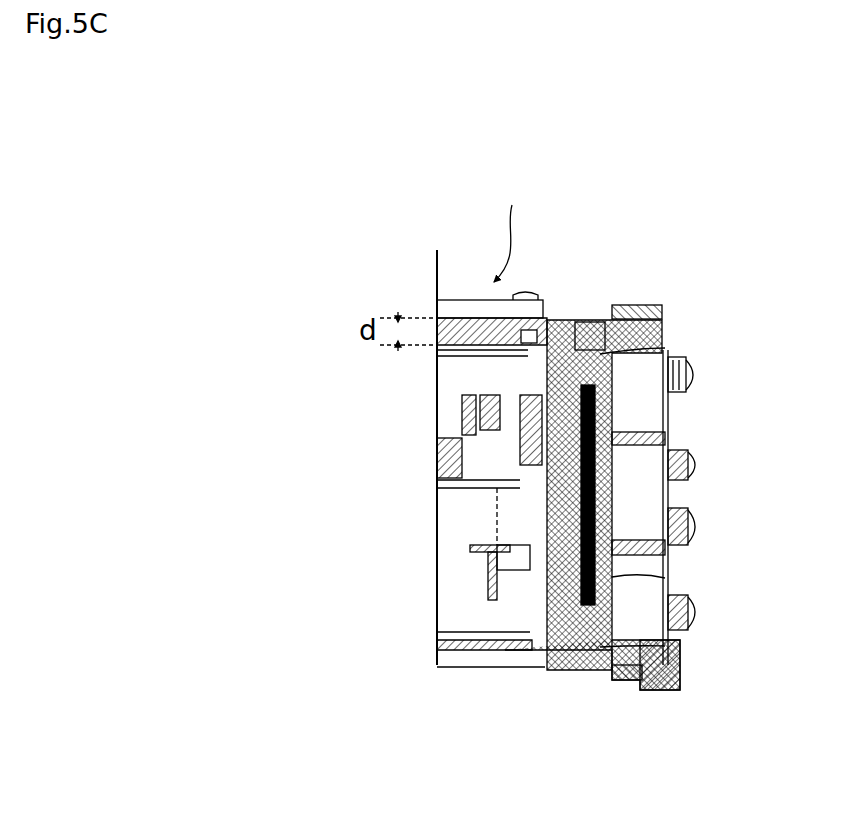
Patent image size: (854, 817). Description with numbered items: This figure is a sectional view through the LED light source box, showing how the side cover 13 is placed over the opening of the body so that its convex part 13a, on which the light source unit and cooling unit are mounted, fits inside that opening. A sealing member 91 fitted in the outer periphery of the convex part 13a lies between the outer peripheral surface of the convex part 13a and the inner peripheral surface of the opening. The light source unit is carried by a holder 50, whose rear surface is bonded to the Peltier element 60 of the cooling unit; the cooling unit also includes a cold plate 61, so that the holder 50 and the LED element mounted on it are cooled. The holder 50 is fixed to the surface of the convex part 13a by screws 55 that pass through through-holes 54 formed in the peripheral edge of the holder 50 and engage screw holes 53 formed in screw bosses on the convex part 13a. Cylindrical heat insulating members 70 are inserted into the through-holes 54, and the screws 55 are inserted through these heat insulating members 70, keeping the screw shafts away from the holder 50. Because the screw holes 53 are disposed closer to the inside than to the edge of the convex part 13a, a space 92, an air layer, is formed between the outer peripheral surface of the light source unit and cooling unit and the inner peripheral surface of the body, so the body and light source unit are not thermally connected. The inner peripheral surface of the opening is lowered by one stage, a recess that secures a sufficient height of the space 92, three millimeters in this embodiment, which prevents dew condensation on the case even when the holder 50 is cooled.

The side cover 13 is at (665, 410).
The convex part 13a is at (662, 690).
The holder 50 is at (540, 600).
The screw hole 53 is at (560, 320).
The through-hole 54 is at (600, 354).
The screw 55 is at (545, 366).
The Peltier element 60 is at (670, 546).
The cold plate 61 is at (670, 580).
The heat insulating member 70 is at (545, 378).
The sealing member 91 is at (640, 306).
The space 92 is at (592, 320).